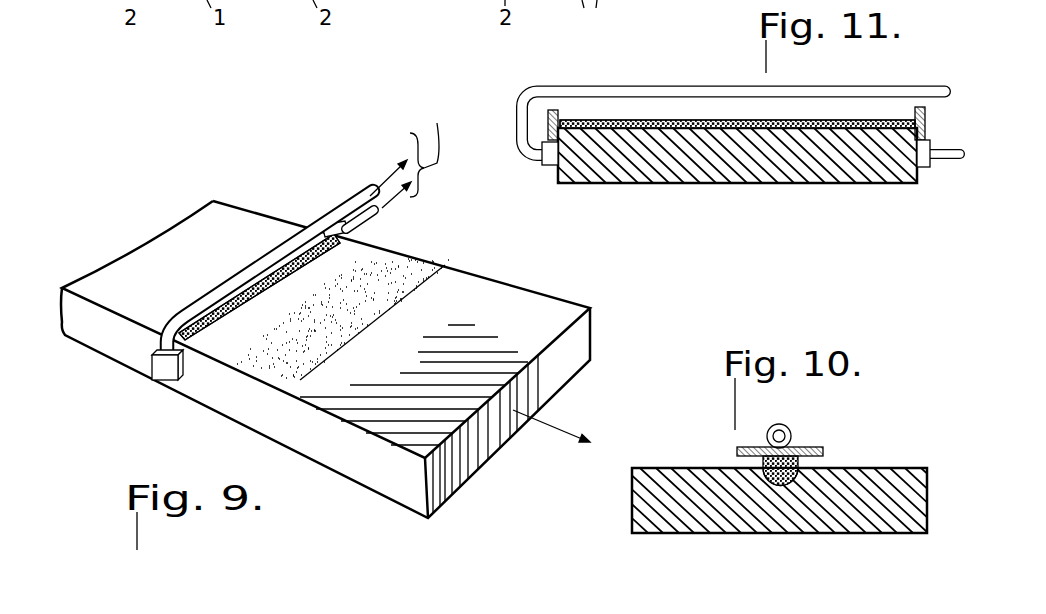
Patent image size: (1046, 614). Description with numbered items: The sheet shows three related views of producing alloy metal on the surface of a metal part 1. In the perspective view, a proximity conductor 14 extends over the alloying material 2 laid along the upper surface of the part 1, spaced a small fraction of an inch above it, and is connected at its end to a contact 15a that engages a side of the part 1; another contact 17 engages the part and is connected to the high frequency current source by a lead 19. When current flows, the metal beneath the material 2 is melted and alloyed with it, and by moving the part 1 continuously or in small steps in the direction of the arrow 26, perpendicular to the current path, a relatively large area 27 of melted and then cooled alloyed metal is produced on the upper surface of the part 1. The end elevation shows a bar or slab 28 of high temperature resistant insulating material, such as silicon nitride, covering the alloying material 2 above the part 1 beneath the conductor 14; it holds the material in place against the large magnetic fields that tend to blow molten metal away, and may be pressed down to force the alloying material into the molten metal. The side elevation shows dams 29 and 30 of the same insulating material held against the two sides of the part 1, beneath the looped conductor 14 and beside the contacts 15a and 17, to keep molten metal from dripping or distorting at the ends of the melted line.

In FIG. 9, the metal part 1 is at (540, 308).
In FIG. 11, the metal part 1 is at (857, 180).
In FIG. 10, the metal part 1 is at (890, 477).
In FIG. 9, the alloying material 2 is at (263, 280).
In FIG. 11, the alloying material 2 is at (717, 120).
In FIG. 10, the alloying material 2 is at (763, 462).
In FIG. 9, the proximity conductor 14 is at (340, 200).
In FIG. 11, the proximity conductor 14 is at (650, 90).
In FIG. 10, the proximity conductor 14 is at (789, 428).
In FIG. 9, the connector block 15a is at (172, 372).
In FIG. 11, the connector block 15a is at (549, 164).
In FIG. 9, the contact 17 is at (350, 232).
In FIG. 11, the contact 17 is at (930, 167).
In FIG. 9, the lead 19 is at (380, 213).
In FIG. 9, the arrow 26 is at (513, 410).
In FIG. 9, the area 27 is at (420, 272).
In FIG. 10, the bar or slab 28 is at (823, 450).
In FIG. 11, the dam 29 is at (556, 112).
In FIG. 11, the dam 30 is at (908, 110).